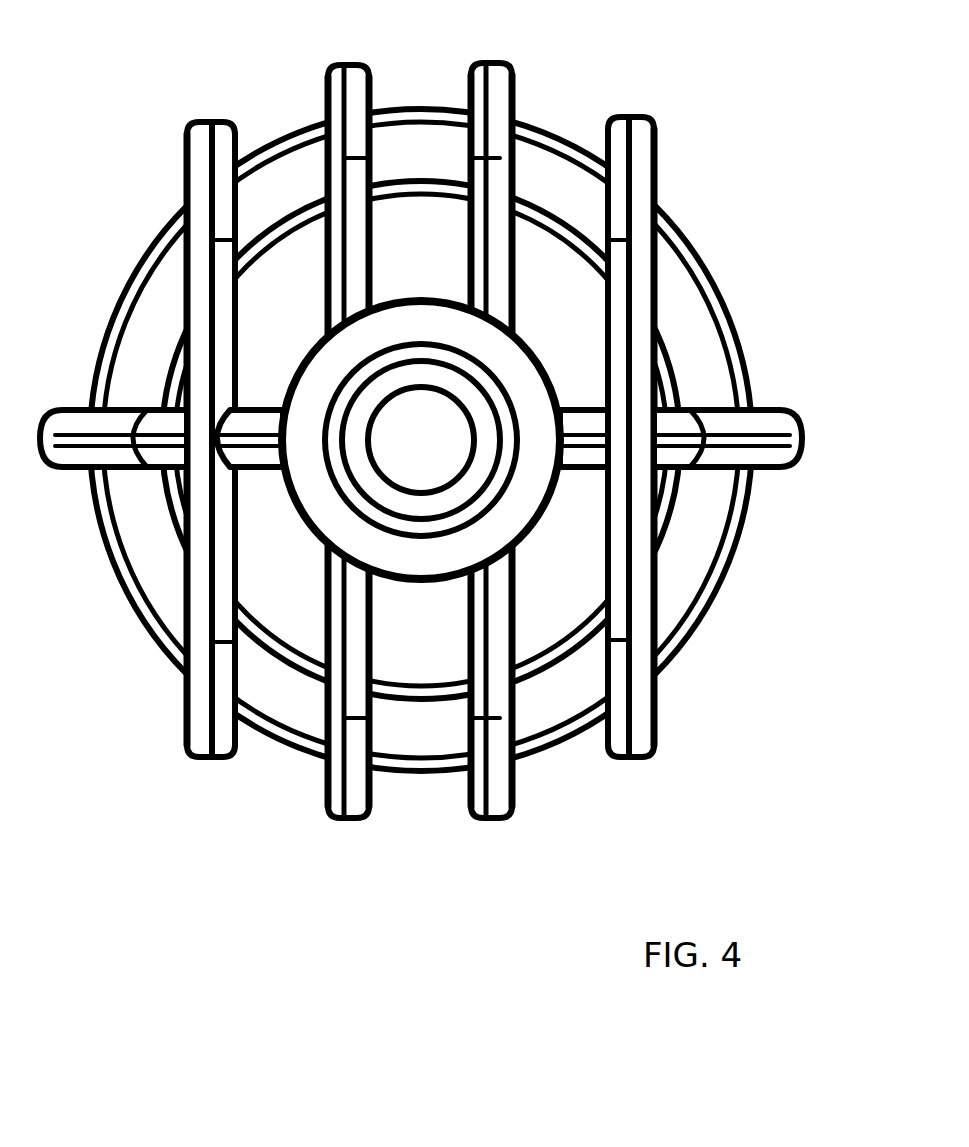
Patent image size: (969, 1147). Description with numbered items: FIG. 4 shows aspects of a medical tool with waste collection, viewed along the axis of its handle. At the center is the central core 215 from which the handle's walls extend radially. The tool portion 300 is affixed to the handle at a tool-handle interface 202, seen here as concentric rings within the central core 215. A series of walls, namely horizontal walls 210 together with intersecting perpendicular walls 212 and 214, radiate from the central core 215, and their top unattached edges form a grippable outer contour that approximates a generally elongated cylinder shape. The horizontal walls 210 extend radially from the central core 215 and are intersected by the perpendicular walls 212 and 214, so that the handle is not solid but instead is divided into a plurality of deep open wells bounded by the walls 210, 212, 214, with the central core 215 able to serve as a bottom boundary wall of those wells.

The wall 214 is at (258, 232).
The central core 215 is at (293, 377).
The tool portion 300 is at (437, 449).
The tool-handle interface 202 is at (435, 512).
The wall 212 is at (438, 648).
The horizontal wall 210 is at (773, 458).